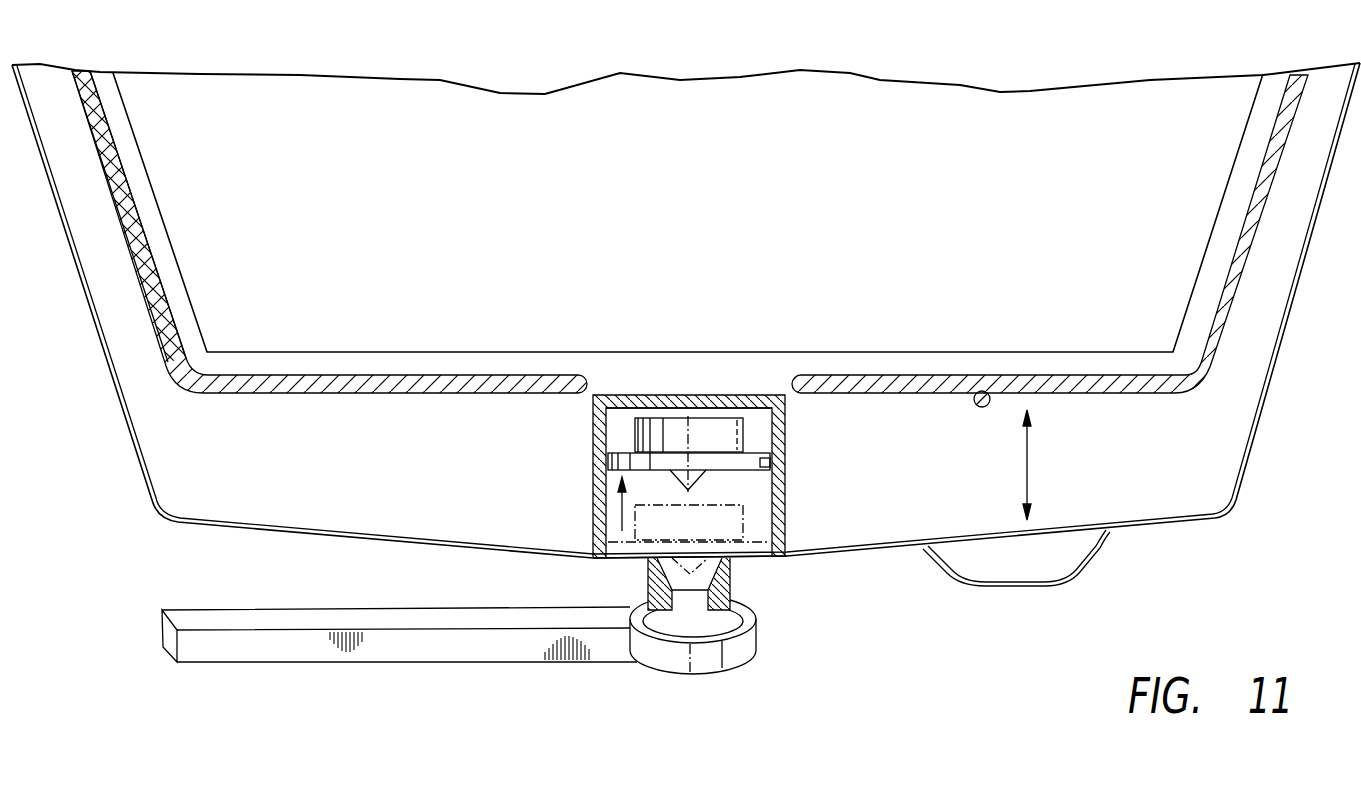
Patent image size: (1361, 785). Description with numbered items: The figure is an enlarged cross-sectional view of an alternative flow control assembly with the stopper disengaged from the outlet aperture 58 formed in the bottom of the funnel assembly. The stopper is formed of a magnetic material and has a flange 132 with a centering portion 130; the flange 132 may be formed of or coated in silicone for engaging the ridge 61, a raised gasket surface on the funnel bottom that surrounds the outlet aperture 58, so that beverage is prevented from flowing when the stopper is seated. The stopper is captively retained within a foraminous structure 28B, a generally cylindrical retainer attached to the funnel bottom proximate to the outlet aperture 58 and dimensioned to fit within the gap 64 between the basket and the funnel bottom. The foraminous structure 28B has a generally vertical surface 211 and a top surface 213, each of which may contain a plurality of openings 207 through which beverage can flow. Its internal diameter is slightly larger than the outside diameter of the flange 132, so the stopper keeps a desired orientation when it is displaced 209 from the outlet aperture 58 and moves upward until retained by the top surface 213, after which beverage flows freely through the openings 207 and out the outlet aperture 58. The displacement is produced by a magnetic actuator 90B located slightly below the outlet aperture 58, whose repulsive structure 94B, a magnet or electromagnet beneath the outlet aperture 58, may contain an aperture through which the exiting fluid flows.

The foraminous structure 28B is at (617, 437).
The outlet aperture 58 is at (683, 607).
The ridge 61 is at (727, 560).
The gap 64 is at (1027, 472).
The magnetic actuator 90B is at (432, 678).
The repulsive structure 94B is at (757, 630).
The centering portion 130 is at (703, 481).
The flange 132 is at (770, 463).
The openings 207 is at (763, 395).
The displacement 209 is at (622, 522).
The generally vertical surface 211 is at (592, 533).
The top surface 213 is at (635, 395).